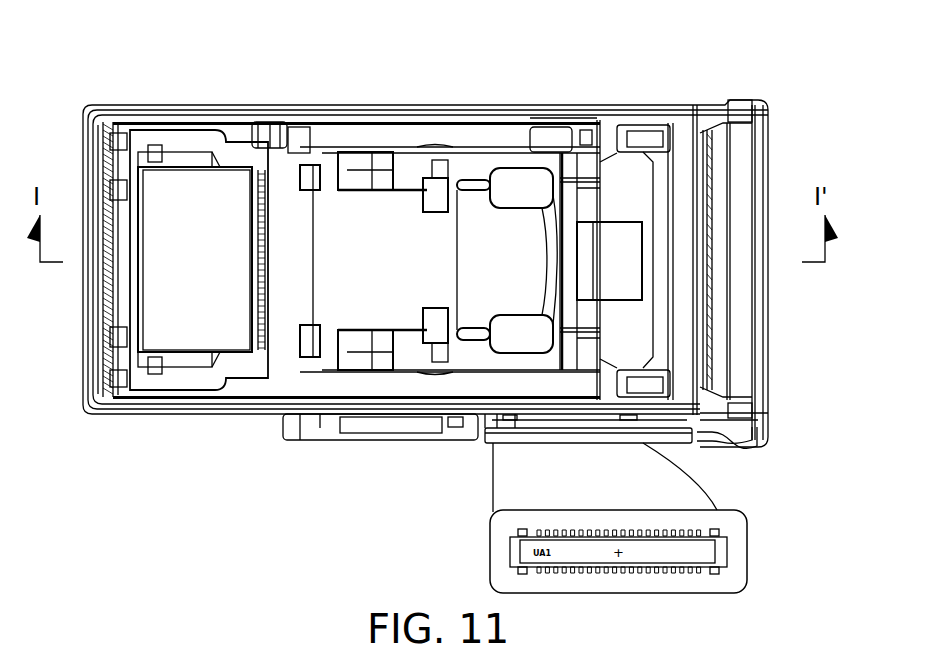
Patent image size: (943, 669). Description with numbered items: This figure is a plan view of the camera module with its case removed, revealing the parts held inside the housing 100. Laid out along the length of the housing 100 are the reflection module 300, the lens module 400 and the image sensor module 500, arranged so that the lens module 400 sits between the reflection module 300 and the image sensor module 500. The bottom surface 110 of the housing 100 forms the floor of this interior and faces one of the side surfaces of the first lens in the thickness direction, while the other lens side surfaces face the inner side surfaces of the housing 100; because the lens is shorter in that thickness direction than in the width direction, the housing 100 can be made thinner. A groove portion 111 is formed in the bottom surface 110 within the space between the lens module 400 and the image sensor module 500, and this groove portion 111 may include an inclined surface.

The housing 100 is at (458, 124).
The bottom surface 110 is at (623, 172).
The groove portion 111 is at (625, 270).
The reflection module 300 is at (190, 306).
The lens module 400 is at (371, 300).
The image sensor module 500 is at (730, 86).